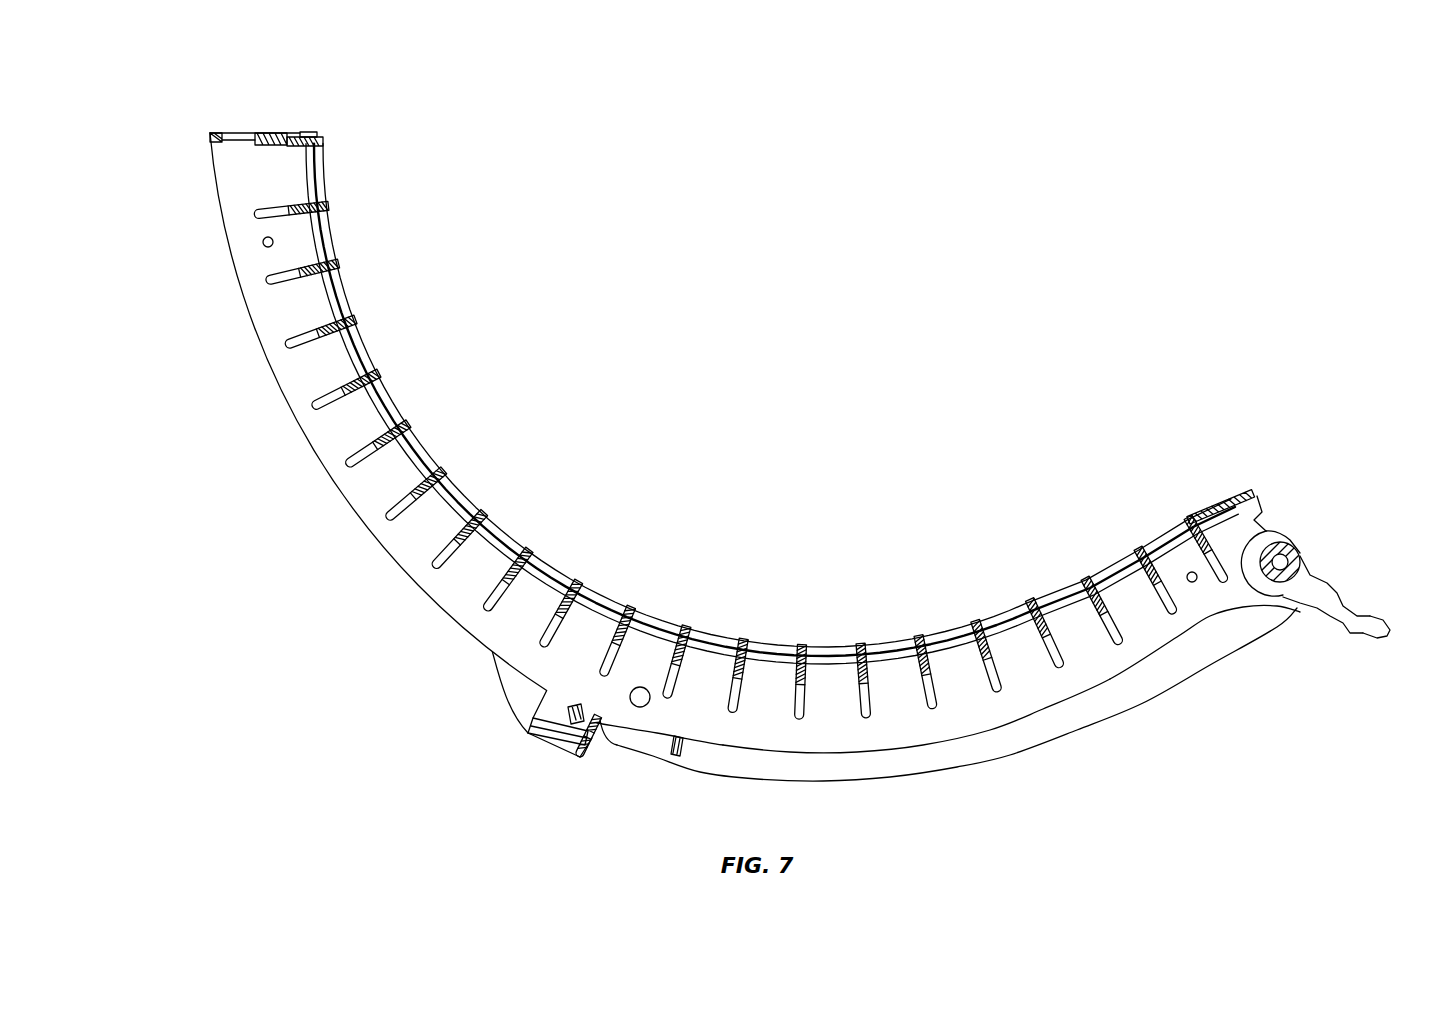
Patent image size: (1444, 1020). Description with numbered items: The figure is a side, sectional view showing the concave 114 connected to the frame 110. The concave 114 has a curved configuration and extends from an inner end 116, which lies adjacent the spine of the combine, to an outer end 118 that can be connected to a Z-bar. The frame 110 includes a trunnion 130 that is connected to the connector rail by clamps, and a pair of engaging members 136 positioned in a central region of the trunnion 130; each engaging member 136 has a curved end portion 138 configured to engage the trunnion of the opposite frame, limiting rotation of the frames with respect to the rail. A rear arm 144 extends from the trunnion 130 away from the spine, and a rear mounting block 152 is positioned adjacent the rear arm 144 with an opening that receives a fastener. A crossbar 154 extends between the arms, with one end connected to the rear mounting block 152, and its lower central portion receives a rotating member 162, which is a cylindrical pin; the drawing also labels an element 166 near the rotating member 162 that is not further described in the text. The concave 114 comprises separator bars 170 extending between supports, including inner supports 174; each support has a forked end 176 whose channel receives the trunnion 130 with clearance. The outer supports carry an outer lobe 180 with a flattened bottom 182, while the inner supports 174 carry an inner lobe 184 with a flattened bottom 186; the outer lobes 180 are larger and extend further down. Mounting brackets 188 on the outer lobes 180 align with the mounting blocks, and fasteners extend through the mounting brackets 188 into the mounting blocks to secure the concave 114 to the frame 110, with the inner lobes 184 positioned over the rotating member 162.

The frame 110 is at (1052, 745).
The concave 114 is at (185, 270).
The inner end 116 is at (1255, 518).
The outer end 118 is at (258, 133).
The trunnion 130 is at (1286, 544).
The engaging members 136 is at (1325, 609).
The curved end portion 138 is at (1380, 637).
The rear arm 144 is at (925, 765).
The rear mounting block 152 is at (653, 746).
The crossbar 154 is at (575, 759).
The rotating member 162 is at (594, 712).
The pin end 166 is at (583, 757).
The separator bars 170 is at (1162, 533).
The inner supports 174 is at (1105, 663).
The forked end 176 is at (1240, 598).
The outer lobe 180 is at (510, 675).
The flattened bottom 182 is at (498, 697).
The inner lobe 184 is at (573, 655).
The flattened bottom 186 is at (598, 717).
The mounting brackets 188 is at (533, 725).